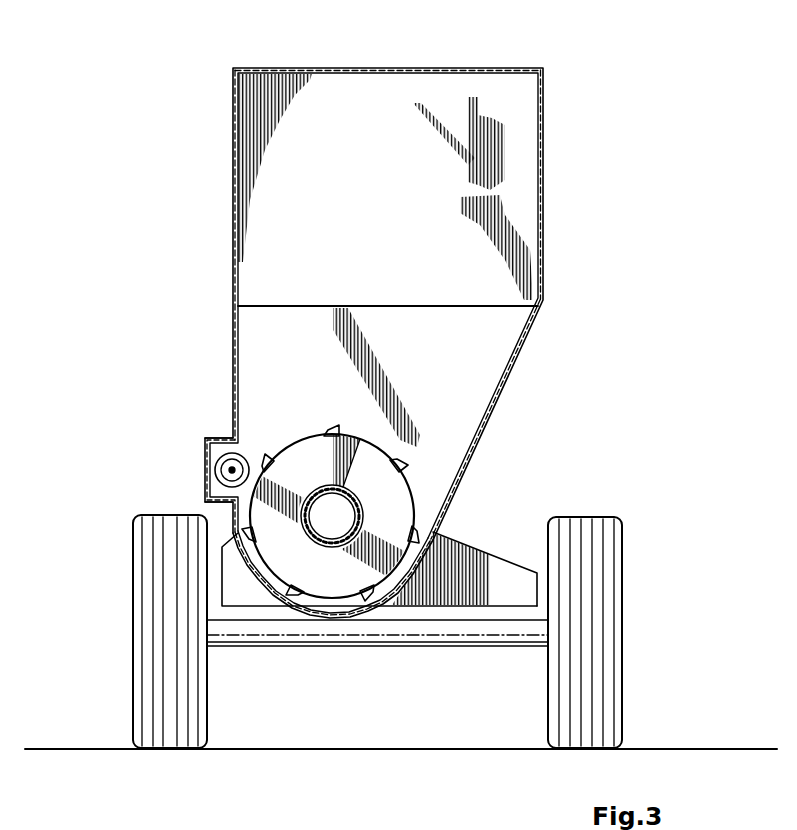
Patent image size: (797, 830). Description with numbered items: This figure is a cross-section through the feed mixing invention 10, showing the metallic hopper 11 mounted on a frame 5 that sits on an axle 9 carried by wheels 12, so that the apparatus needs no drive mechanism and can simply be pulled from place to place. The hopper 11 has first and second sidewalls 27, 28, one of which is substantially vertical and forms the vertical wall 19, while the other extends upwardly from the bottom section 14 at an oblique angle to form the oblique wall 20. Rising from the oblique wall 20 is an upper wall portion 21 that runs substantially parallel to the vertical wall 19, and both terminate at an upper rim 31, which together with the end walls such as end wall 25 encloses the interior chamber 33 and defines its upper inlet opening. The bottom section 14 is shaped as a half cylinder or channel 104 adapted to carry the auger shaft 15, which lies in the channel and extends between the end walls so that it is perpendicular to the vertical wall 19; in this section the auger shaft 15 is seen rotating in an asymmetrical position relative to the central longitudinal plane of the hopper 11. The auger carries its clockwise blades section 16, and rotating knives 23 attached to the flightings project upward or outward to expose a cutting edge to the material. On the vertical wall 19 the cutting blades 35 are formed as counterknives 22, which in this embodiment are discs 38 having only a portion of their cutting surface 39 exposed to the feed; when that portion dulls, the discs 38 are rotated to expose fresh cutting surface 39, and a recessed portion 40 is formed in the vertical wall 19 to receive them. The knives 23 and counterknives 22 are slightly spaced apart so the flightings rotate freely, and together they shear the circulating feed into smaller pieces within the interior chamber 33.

The invention 10 is at (548, 102).
The interior chamber 33 is at (487, 55).
The upper rim 31 is at (365, 65).
The hopper 11 is at (375, 170).
The second end wall 25 is at (332, 90).
The upper wall portion 21 is at (543, 192).
The oblique wall 20 is at (533, 333).
The vertical wall 19 is at (232, 312).
The first sidewall 27 is at (168, 347).
The second sidewall 28 is at (502, 418).
The cutting surface 39 is at (235, 410).
The counterknives 22 is at (216, 466).
The discs 38 is at (212, 480).
The recessed portion 40 is at (207, 500).
The cutting blades 35 is at (258, 432).
The rotating knives 23 is at (266, 458).
The clockwise blades section 16 is at (395, 493).
The auger shaft 15 is at (325, 537).
The bottom section 14 is at (323, 616).
The frame 5 is at (425, 614).
The axle 9 is at (480, 623).
The wheels 12 is at (160, 658).
The channel 104 is at (485, 536).